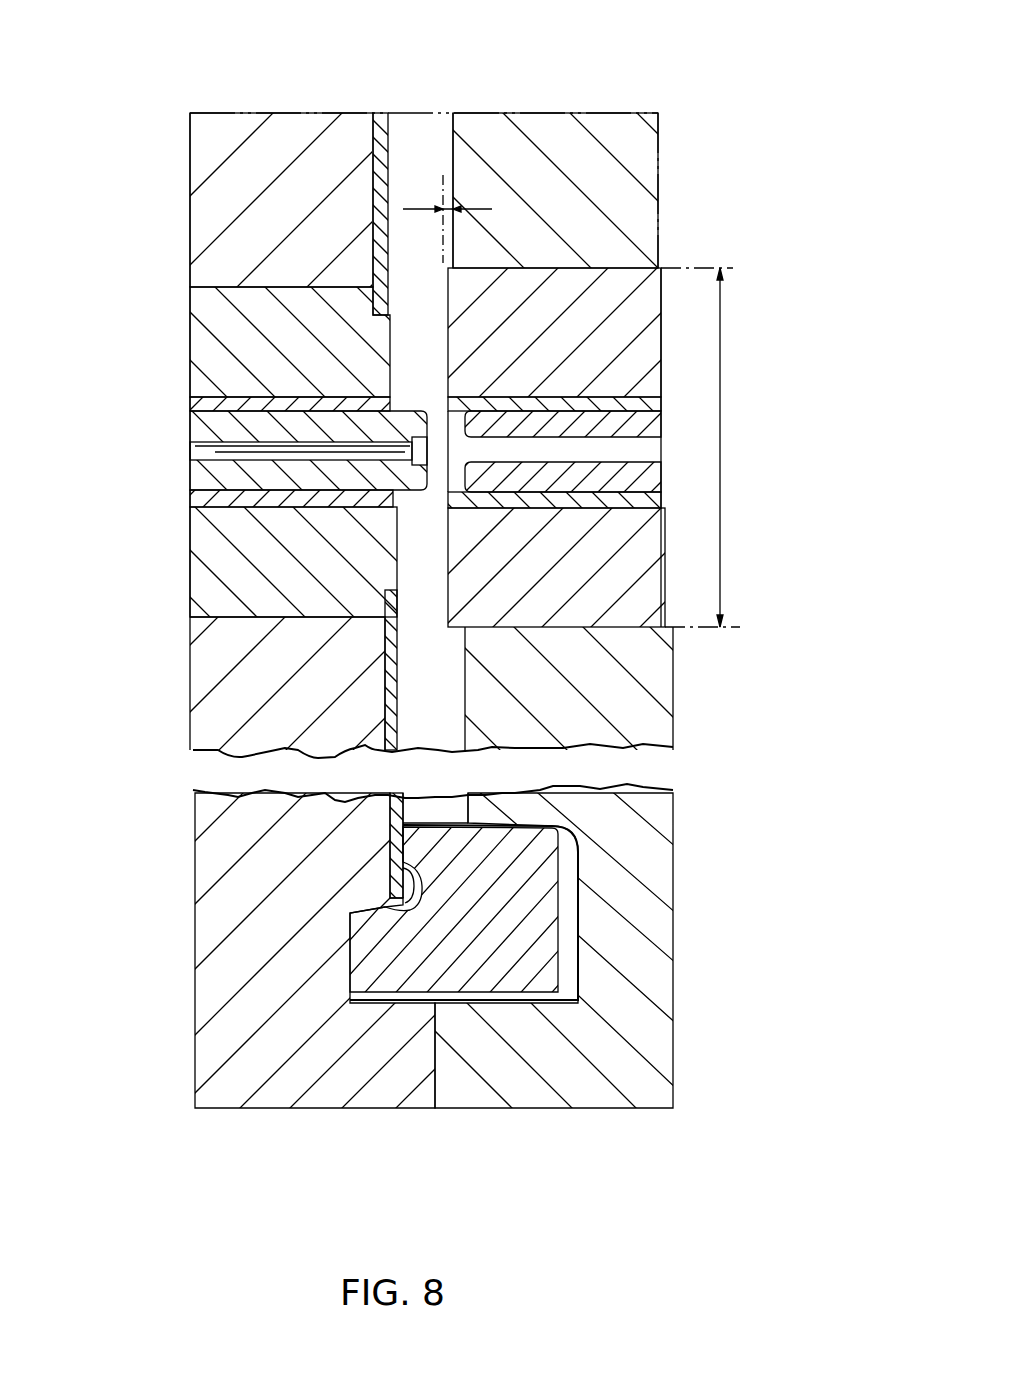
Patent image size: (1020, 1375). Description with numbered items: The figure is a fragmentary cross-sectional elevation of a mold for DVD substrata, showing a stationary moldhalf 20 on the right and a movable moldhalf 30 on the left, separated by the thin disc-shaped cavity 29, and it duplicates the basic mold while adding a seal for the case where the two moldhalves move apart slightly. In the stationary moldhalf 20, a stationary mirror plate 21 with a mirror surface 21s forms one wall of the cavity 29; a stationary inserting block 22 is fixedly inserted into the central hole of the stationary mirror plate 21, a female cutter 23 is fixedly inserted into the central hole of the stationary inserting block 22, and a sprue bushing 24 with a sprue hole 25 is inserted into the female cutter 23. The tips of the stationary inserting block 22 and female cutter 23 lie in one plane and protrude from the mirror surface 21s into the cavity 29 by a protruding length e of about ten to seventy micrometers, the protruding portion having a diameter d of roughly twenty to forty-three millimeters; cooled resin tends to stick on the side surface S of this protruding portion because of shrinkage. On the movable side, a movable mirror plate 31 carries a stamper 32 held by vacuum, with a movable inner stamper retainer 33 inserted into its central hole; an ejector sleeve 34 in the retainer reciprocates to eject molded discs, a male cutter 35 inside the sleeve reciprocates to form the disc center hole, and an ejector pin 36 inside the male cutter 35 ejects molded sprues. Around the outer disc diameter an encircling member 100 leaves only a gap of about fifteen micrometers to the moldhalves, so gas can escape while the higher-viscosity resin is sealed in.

The stationary moldhalf 20 is at (608, 113).
The stationary mirror plate 21 is at (630, 251).
The mirror surface 21s is at (447, 113).
The stationary inserting block 22 is at (594, 394).
The female cutter 23 is at (663, 402).
The sprue bushing 24 is at (499, 508).
The sprue hole 25 is at (595, 492).
The cavity 29 is at (453, 726).
The movable moldhalf 30 is at (232, 112).
The movable mirror plate 31 is at (245, 273).
The stamper 32 is at (380, 113).
The movable inner stamper retainer 33 is at (245, 394).
The ejector sleeve 34 is at (190, 403).
The male cutter 35 is at (192, 430).
The ejector pin 36 is at (192, 458).
The encircling member 100 is at (512, 1003).
The protruding length e is at (453, 197).
The diameter of the inserting block protruding portion d is at (720, 447).
The side surface S is at (443, 258).